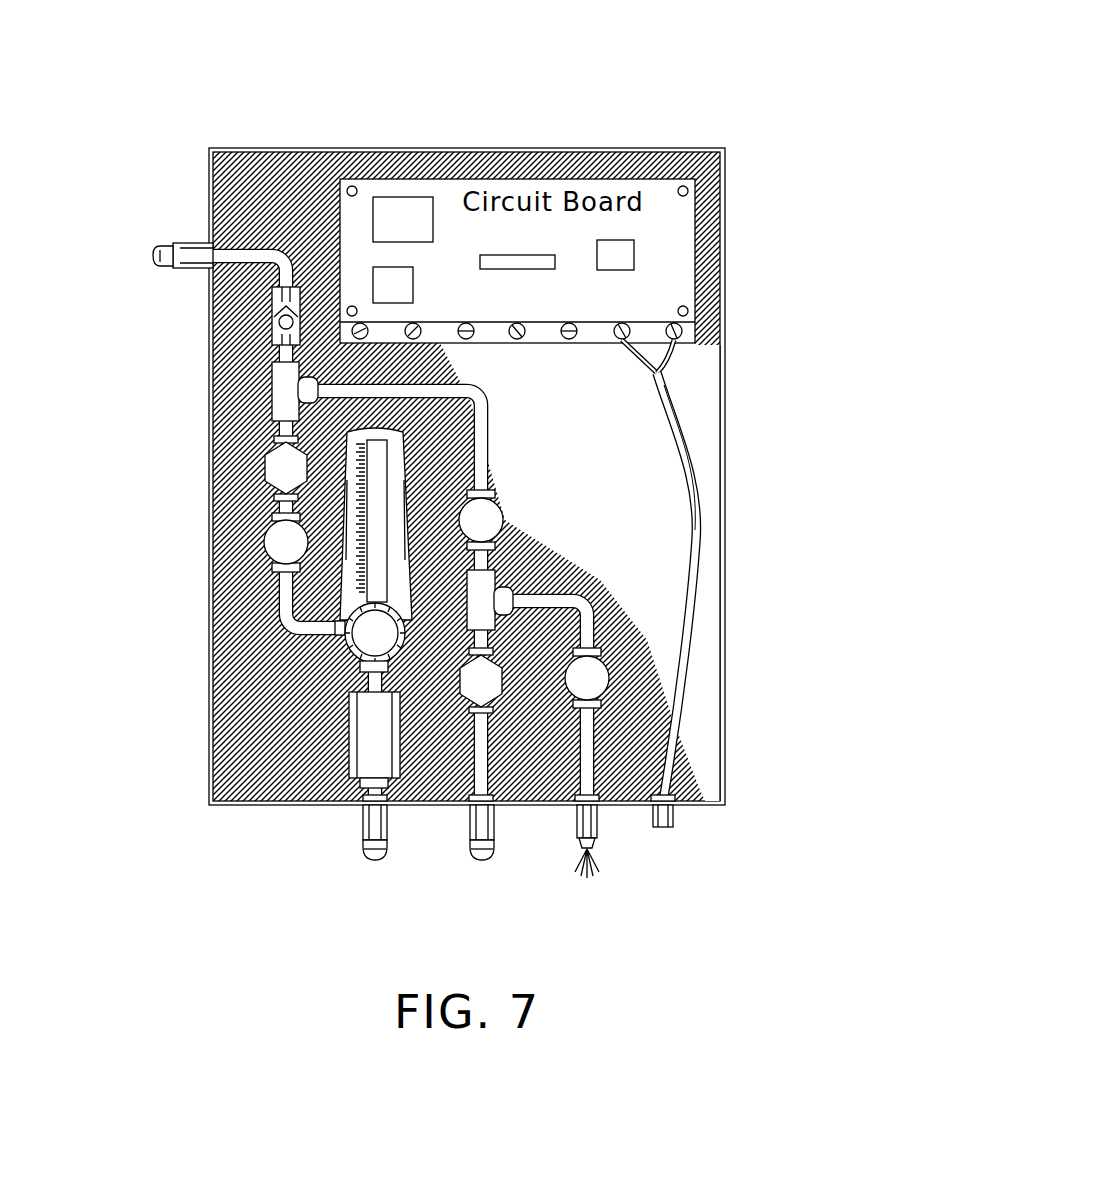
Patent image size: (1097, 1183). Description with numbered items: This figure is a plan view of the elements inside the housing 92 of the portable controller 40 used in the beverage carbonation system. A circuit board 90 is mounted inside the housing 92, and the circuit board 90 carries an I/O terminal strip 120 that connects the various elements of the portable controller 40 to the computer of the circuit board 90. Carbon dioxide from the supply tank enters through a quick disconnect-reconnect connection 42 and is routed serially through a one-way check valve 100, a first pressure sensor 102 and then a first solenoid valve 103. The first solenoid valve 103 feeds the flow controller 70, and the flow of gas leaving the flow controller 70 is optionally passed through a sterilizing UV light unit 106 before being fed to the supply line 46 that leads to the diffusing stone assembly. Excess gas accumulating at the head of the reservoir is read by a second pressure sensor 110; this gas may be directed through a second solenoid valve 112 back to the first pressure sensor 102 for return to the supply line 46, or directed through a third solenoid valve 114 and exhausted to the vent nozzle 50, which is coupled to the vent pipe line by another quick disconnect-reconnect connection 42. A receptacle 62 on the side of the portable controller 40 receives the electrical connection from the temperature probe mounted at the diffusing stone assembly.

The portable controller 40 is at (675, 83).
The circuit board 90 is at (457, 156).
The housing 92 is at (727, 272).
The quick disconnect-reconnect connection 42 is at (198, 243).
The one-way check valve 100 is at (270, 305).
The first pressure sensor 102 is at (264, 462).
The first solenoid valve 103 is at (264, 540).
The flow controller 70 is at (352, 652).
The sterilizing UV light unit 106 is at (348, 735).
The supply line 46 is at (363, 788).
The second pressure sensor 110 is at (460, 706).
The vent nozzle 50 is at (600, 830).
The receptacle 62 is at (677, 817).
The I/O terminal strip 120 is at (543, 347).
The second solenoid valve 112 is at (510, 516).
The third solenoid valve 114 is at (610, 667).